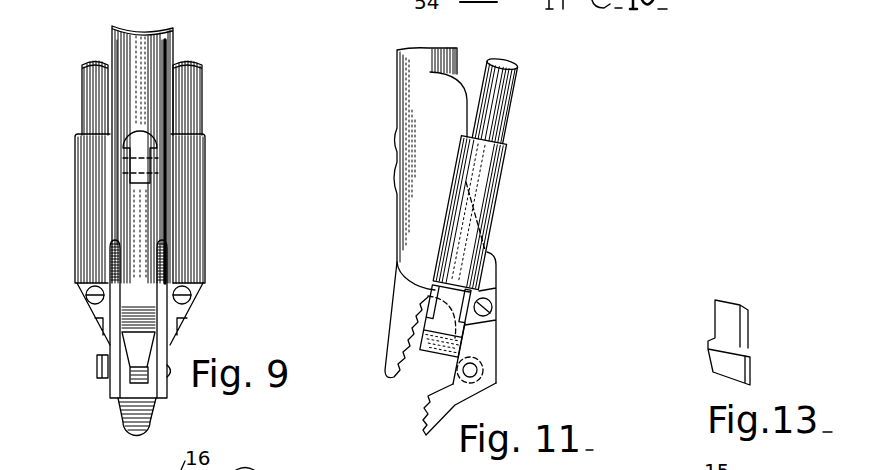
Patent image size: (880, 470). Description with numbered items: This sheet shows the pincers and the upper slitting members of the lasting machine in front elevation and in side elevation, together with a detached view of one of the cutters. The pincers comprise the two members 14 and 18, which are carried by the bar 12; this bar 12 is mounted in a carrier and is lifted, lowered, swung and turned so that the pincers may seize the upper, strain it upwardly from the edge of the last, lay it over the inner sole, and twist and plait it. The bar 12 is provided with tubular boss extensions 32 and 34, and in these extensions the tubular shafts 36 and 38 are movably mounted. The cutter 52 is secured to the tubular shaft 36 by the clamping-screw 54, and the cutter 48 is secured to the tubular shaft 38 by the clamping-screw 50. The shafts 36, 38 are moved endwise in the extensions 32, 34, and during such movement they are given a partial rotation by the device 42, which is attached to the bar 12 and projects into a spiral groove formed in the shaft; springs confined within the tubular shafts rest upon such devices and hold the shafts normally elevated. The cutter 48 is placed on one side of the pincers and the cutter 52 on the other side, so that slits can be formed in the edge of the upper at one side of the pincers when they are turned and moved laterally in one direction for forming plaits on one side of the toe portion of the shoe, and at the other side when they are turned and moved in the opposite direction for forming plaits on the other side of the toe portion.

In FIG. 9, the bar 12 is at (174, 37).
In FIG. 11, the bar 12 is at (397, 103).
In FIG. 11, the pincers member 14 is at (424, 434).
In FIG. 11, the pincers member 18 is at (388, 372).
In FIG. 9, the tubular boss extension 32 is at (205, 212).
In FIG. 11, the tubular boss extension 32 is at (491, 210).
In FIG. 9, the tubular boss extension 34 is at (76, 205).
In FIG. 11, the tubular boss extension 34 is at (424, 296).
In FIG. 9, the tubular shaft 36 is at (202, 85).
In FIG. 11, the tubular shaft 36 is at (509, 111).
In FIG. 9, the tubular shaft 38 is at (82, 82).
In FIG. 11, the device 42 is at (496, 317).
In FIG. 9, the cutter 48 is at (93, 330).
In FIG. 13, the cutter 48 is at (747, 347).
In FIG. 9, the clamping-screw 50 is at (86, 297).
In FIG. 9, the cutter 52 is at (178, 333).
In FIG. 11, the cutter 52 is at (433, 352).
In FIG. 9, the clamping-screw 54 is at (191, 297).